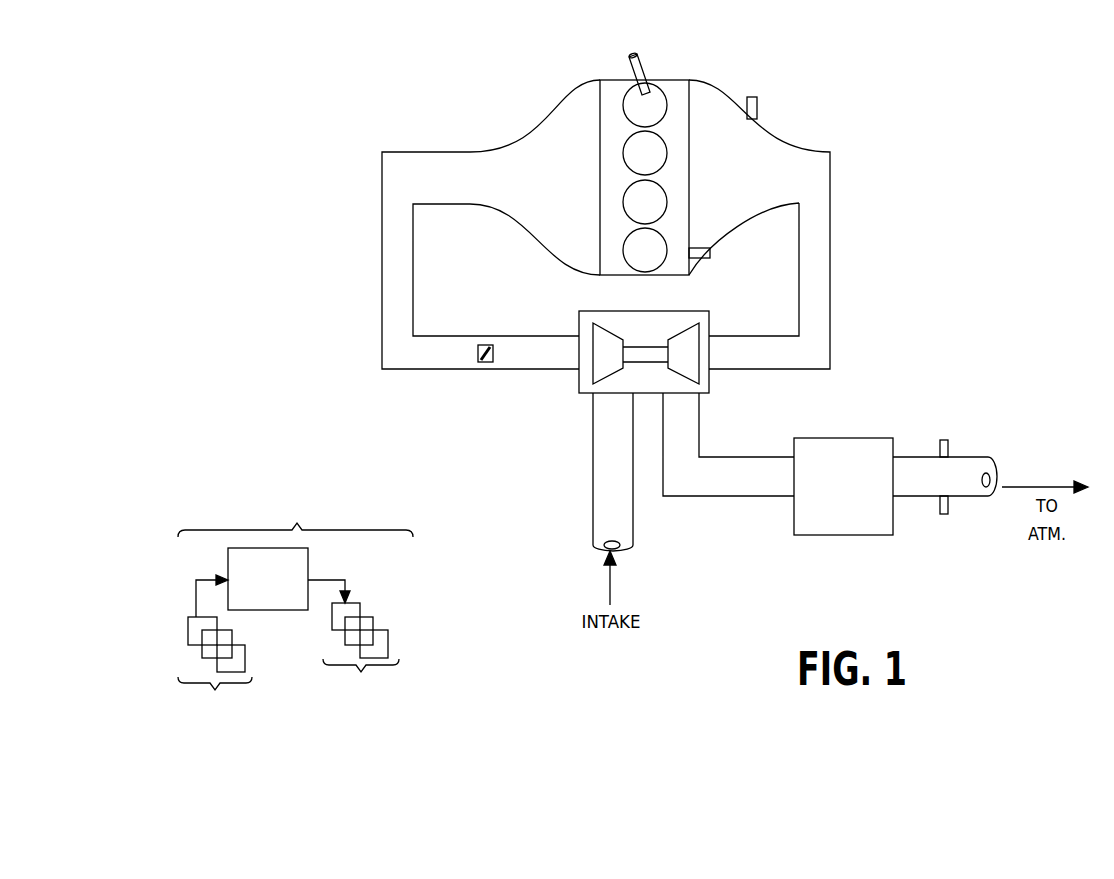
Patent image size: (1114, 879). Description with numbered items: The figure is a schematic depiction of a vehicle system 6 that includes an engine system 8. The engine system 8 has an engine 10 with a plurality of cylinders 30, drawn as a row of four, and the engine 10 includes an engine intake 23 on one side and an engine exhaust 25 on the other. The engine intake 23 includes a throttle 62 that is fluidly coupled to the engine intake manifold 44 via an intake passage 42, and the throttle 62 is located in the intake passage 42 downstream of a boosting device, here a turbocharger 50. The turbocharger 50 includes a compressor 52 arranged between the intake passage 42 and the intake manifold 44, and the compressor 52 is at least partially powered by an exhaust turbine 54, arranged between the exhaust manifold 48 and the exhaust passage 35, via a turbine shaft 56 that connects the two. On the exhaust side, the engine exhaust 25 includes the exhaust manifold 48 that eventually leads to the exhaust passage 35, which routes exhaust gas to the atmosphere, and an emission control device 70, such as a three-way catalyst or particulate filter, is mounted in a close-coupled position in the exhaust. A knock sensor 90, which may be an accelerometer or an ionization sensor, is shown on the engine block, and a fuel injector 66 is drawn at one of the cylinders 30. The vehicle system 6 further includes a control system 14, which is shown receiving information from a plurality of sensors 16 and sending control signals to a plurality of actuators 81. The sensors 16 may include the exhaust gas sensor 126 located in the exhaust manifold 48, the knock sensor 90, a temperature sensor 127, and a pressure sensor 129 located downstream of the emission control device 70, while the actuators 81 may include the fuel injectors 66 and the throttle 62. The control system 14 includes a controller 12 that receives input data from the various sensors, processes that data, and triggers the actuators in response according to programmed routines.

The vehicle system 6 is at (148, 94).
The engine system 8 is at (845, 82).
The engine 10 is at (689, 162).
The controller 12 is at (268, 579).
The control system 14 is at (295, 604).
The sensors 16 is at (215, 651).
The engine intake 23 is at (527, 462).
The engine exhaust 25 is at (858, 268).
The cylinders 30 is at (662, 100).
The exhaust passage 35 is at (955, 457).
The intake passage 42 is at (593, 494).
The intake manifold 44 is at (538, 181).
The exhaust manifold 48 is at (784, 181).
The turbocharger 50 is at (640, 311).
The compressor 52 is at (593, 342).
The exhaust turbine 54 is at (699, 342).
The turbine shaft 56 is at (633, 348).
The throttle 62 is at (494, 353).
The fuel injectors 66 is at (638, 52).
The emission control device 70 is at (828, 438).
The actuators 81 is at (353, 646).
The knock sensor 90 is at (712, 253).
The exhaust gas sensor 126 is at (757, 114).
The temperature sensor 127 is at (949, 505).
The pressure sensor 129 is at (944, 440).